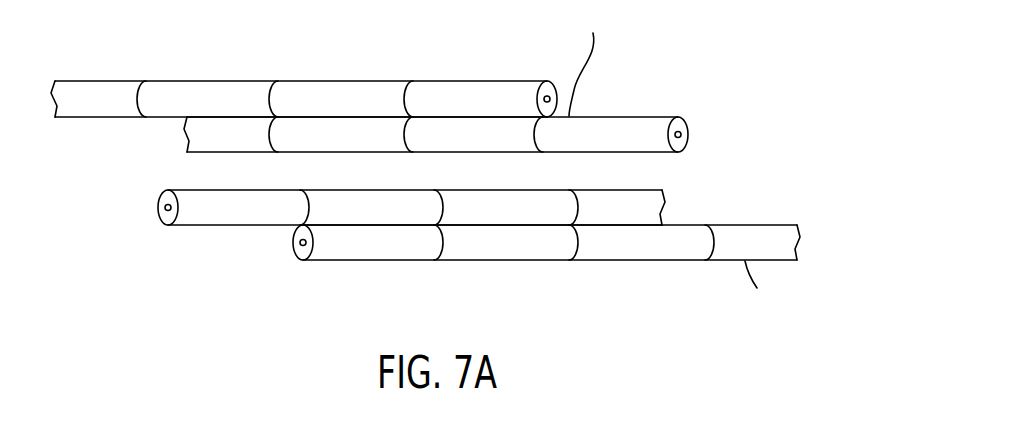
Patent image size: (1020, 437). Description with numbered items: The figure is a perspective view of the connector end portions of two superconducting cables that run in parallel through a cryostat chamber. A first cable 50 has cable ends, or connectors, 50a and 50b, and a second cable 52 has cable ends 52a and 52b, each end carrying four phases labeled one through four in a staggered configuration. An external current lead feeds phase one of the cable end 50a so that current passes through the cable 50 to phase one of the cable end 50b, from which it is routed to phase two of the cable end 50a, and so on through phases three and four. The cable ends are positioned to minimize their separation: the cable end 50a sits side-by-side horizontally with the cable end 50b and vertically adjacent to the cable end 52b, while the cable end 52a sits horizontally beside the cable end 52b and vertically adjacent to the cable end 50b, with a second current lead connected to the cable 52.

The first superconducting cable 50 is at (394, 81).
The cable end of first cable 50a is at (617, 124).
The cable end of first cable 50b is at (493, 89).
The second superconducting cable 52 is at (462, 254).
The cable end of second cable 52a is at (230, 218).
The cable end of second cable 52b is at (367, 250).